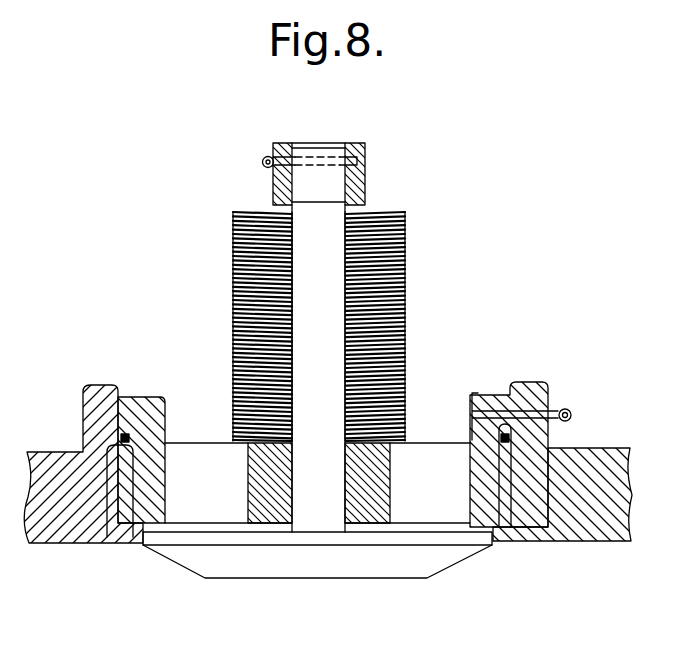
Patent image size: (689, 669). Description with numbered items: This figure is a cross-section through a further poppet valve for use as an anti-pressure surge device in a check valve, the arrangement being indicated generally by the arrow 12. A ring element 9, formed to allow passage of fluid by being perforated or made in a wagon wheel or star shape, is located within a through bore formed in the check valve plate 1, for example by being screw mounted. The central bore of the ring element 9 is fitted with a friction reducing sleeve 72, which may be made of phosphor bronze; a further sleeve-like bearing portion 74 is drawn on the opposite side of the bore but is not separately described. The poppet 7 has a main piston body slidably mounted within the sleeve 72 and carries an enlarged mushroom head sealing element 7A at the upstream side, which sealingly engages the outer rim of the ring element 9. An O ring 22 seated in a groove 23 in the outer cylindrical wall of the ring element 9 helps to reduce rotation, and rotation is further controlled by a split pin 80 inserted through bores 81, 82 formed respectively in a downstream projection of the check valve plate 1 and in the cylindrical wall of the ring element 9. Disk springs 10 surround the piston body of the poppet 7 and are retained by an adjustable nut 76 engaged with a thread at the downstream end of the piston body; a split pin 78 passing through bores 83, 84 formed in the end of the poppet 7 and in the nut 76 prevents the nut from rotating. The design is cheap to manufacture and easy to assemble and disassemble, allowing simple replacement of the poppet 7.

The check valve plate 1 is at (47, 543).
The ring element 9 is at (146, 400).
The O ring 22 is at (108, 540).
The spring assembly 12 is at (203, 262).
The poppet 7 is at (327, 225).
The mushroom head sealing element 7A is at (288, 563).
The left bushing 74 is at (263, 445).
The friction reducing sleeve 72 is at (364, 445).
The disk springs 10 is at (405, 292).
The adjustable nut 76 is at (277, 187).
The split pin 78 is at (262, 158).
The bore 83 is at (329, 147).
The bore 84 is at (365, 170).
The split pin 80 is at (572, 415).
The bore 81 is at (545, 386).
The bore 82 is at (495, 398).
The groove 23 is at (513, 445).